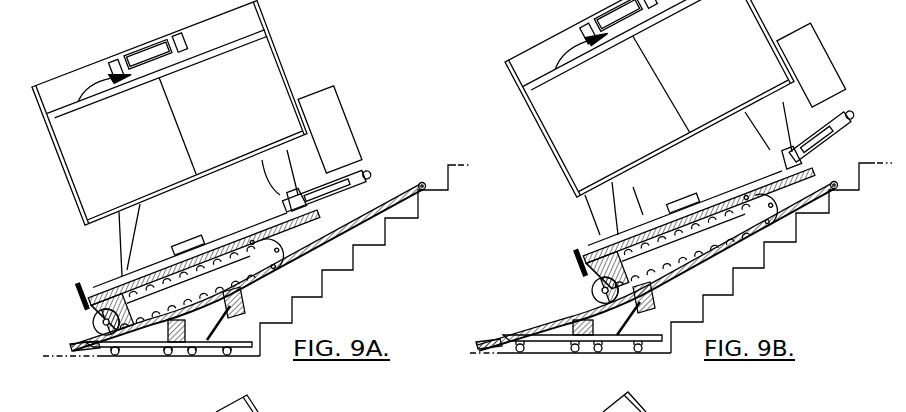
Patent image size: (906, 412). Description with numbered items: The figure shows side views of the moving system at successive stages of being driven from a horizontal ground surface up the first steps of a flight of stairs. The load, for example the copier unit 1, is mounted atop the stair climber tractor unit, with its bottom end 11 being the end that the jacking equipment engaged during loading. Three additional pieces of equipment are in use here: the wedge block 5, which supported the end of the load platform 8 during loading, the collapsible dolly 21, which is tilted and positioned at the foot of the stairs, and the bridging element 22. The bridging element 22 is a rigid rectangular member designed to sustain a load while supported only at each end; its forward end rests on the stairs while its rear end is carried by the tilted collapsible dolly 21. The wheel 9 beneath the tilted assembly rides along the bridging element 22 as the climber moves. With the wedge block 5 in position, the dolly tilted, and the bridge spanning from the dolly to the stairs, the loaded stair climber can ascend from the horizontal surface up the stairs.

In FIG. 9A, the Xerox 2400 unit 1 is at (197, 130).
In FIG. 9B, the Xerox 2400 unit 1 is at (675, 112).
In FIG. 9A, the wedge block 5 is at (73, 362).
In FIG. 9A, the load platform 8 is at (70, 302).
In FIG. 9A, the wheel 9 is at (84, 323).
In FIG. 9B, the wheel 9 is at (673, 258).
In FIG. 9A, the bottom end of the combined load 11 is at (358, 182).
In FIG. 9A, the collapsible dolly 21 is at (146, 351).
In FIG. 9A, the bridging element 22 is at (326, 229).
In FIG. 9B, the bridging element 22 is at (697, 281).